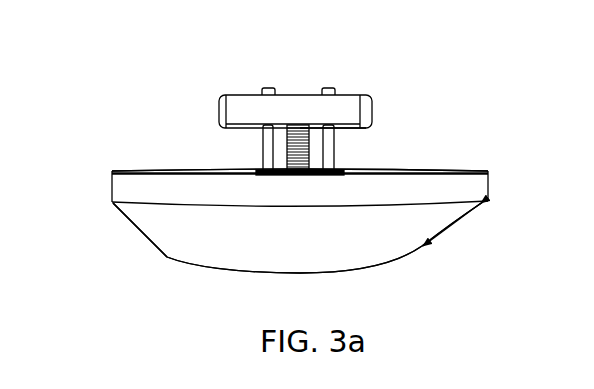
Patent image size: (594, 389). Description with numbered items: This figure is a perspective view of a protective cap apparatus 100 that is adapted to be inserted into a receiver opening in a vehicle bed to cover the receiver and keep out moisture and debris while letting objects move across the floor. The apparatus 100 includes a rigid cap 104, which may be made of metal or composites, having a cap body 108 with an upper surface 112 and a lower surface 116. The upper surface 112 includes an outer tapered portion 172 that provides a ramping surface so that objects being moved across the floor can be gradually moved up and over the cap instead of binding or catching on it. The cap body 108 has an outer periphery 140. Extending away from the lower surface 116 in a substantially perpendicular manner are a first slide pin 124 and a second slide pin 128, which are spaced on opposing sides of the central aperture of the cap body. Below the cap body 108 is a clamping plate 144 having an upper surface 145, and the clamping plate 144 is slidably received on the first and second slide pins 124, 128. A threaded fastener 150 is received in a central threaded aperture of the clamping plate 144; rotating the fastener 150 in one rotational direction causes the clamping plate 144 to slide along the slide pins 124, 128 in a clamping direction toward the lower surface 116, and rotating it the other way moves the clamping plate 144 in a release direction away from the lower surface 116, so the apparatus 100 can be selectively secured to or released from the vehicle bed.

The apparatus 100 is at (446, 73).
The rigid cap 104 is at (485, 204).
The cap body 108 is at (446, 224).
The upper surface 112 is at (428, 249).
The lower surface 116 is at (437, 147).
The first slide pin 124 is at (264, 142).
The second slide pin 128 is at (334, 150).
The outer periphery 140 is at (479, 167).
The clamping plate 144 is at (357, 91).
The upper surface of clamping plate 145 is at (354, 127).
The fastener 150 is at (300, 133).
The outer tapered portion 172 is at (122, 213).